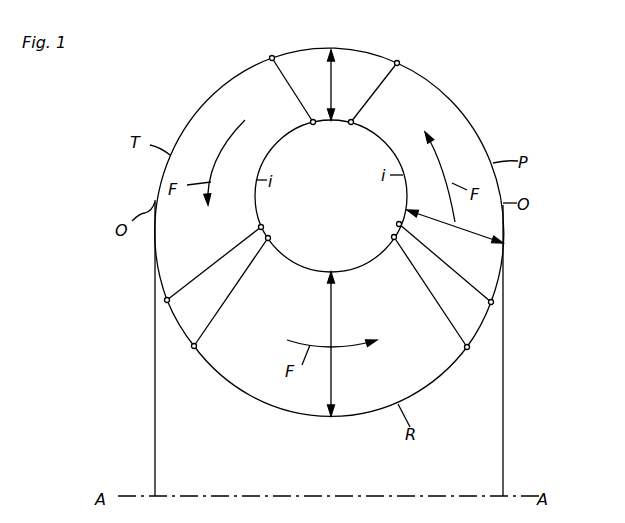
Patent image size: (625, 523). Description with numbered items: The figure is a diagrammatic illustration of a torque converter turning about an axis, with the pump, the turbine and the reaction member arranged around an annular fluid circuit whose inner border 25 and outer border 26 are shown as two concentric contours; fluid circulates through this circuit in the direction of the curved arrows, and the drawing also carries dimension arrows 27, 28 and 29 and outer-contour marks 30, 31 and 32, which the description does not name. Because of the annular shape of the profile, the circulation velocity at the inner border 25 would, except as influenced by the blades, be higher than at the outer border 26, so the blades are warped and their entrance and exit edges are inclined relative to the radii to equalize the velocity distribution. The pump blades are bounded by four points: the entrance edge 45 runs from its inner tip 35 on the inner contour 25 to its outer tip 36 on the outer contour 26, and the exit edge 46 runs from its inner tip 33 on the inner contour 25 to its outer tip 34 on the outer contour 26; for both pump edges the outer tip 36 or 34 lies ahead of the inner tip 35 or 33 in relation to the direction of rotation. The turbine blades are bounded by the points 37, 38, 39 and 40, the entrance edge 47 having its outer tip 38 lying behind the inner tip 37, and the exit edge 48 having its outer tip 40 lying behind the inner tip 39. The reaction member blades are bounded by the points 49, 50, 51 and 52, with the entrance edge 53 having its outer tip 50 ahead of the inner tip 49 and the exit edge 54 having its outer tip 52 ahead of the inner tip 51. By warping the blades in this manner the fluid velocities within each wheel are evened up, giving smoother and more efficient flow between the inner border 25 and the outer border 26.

The inner border 25 is at (385, 143).
The outer border 26 is at (497, 285).
The lower radial spacing 27 is at (334, 313).
The upper radial spacing 28 is at (333, 84).
The lateral spacing 29 is at (468, 232).
The outer ring top segment 30 is at (380, 53).
The outer ring lower-left segment 31 is at (182, 328).
The outer ring lower-right segment 32 is at (480, 328).
The inner tip of pump exit edge 33 is at (351, 125).
The outer tip of pump exit edge 34 is at (400, 63).
The inner tip of pump entrance edge 35 is at (398, 222).
The outer tip of pump entrance edge 36 is at (494, 302).
The inner tip of turbine entrance edge 37 is at (313, 125).
The outer tip of turbine entrance edge 38 is at (273, 55).
The inner tip of turbine exit edge 39 is at (263, 226).
The outer tip of turbine exit edge 40 is at (165, 301).
The pump blade entrance edge 45 is at (428, 252).
The pump blade exit edge 46 is at (366, 101).
The turbine blade entrance edge 47 is at (285, 78).
The turbine blade exit edge 48 is at (216, 273).
The inner tip of reaction member entrance edge 49 is at (271, 238).
The outer tip of reaction member entrance edge 50 is at (197, 347).
The inner tip of reaction member exit edge 51 is at (391, 237).
The outer tip of reaction member exit edge 52 is at (468, 350).
The reaction member blade entrance edge 53 is at (211, 322).
The reaction member blade exit edge 54 is at (448, 316).